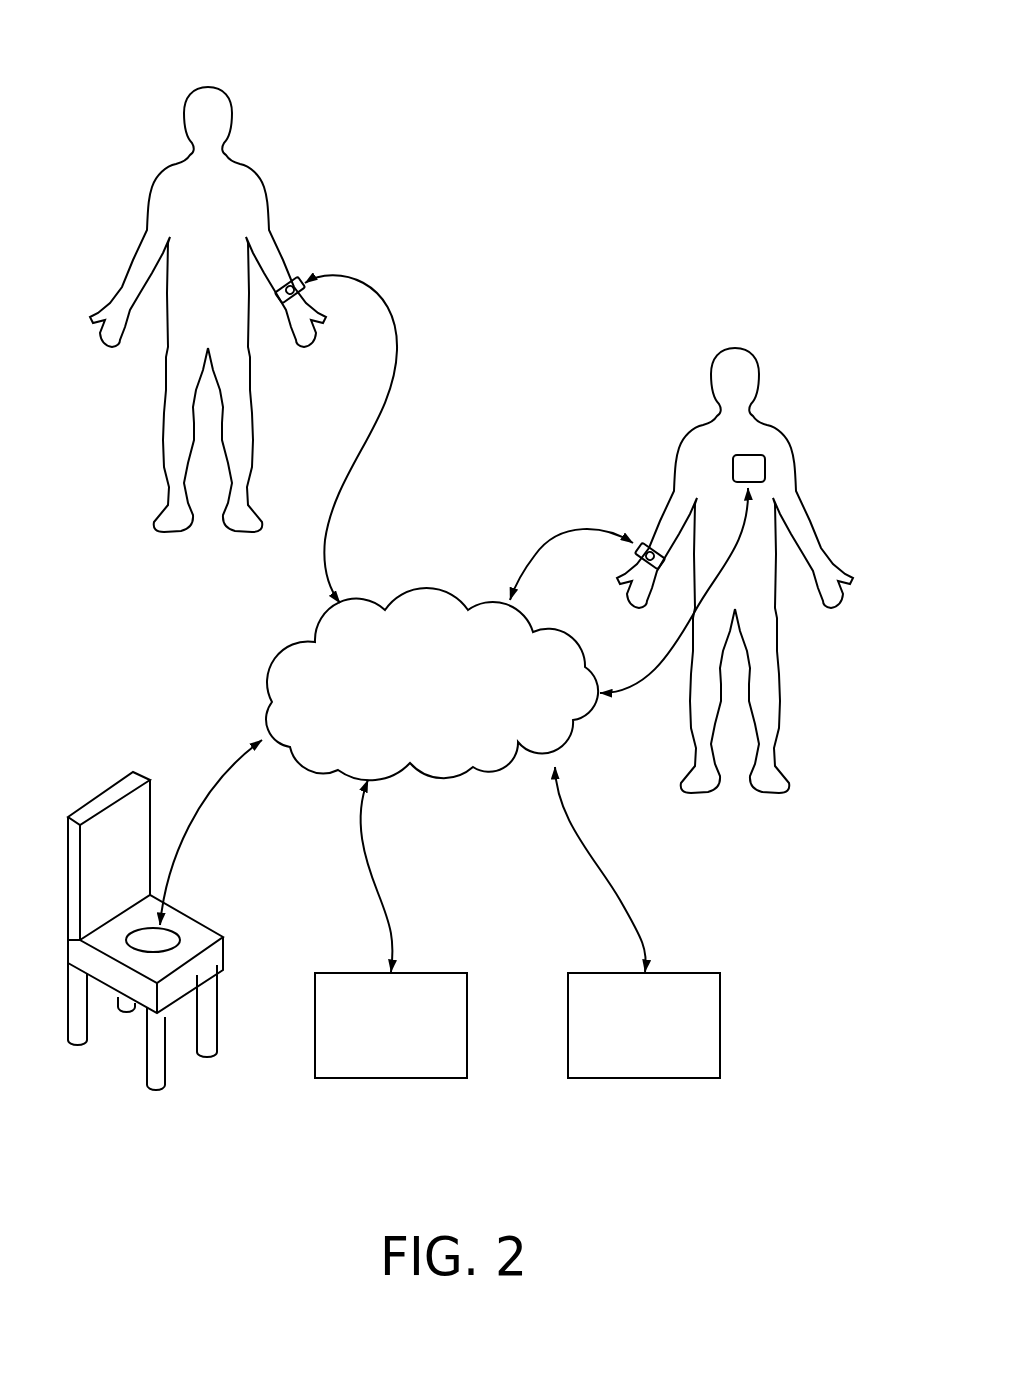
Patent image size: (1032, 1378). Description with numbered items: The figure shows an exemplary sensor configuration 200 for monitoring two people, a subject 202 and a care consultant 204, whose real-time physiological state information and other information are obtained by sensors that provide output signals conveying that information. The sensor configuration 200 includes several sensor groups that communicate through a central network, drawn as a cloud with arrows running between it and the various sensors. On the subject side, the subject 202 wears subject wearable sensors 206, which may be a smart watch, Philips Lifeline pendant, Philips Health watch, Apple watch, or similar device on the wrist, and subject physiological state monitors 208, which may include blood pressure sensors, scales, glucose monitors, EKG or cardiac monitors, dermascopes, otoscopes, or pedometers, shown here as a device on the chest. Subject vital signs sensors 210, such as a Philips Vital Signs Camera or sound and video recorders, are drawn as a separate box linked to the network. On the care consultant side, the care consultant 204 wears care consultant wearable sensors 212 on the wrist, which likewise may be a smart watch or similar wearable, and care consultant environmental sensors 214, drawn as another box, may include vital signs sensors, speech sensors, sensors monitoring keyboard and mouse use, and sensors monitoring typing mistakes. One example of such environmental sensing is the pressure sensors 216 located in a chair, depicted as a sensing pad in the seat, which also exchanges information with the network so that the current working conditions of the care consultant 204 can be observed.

The sensor configuration 200 is at (806, 92).
The subject 202 is at (735, 347).
The care consultant 204 is at (210, 85).
The subject wearable sensors 206 is at (644, 535).
The subject physiological state monitors 208 is at (773, 452).
The subject vital signs sensors 210 is at (645, 1080).
The care consultant wearable sensors 212 is at (300, 275).
The care consultant environmental sensors 214 is at (392, 1080).
The pressure sensors 216 is at (183, 940).